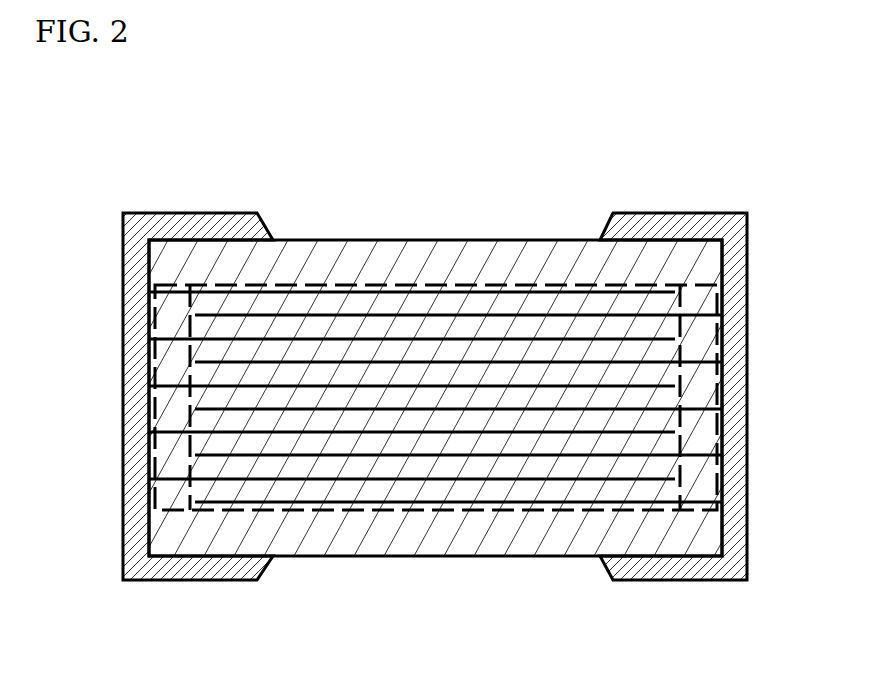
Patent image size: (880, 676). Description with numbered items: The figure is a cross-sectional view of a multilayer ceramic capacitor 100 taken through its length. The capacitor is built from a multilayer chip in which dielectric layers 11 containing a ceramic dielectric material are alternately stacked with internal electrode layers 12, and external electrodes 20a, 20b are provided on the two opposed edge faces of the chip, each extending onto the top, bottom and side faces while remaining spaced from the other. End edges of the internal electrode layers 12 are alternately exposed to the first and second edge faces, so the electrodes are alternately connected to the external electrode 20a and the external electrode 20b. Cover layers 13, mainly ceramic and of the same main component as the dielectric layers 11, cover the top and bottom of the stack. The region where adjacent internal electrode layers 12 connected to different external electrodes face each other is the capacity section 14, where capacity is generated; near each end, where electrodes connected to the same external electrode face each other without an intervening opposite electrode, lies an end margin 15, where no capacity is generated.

The multilayer ceramic capacitor 100 is at (664, 154).
The dielectric layer 11 is at (587, 490).
The internal electrode layer 12 is at (465, 457).
The cover layer 13 is at (335, 255).
The capacity section 14 is at (457, 285).
The end margin 15 is at (173, 282).
The external electrode 20a is at (148, 213).
The external electrode 20b is at (712, 213).